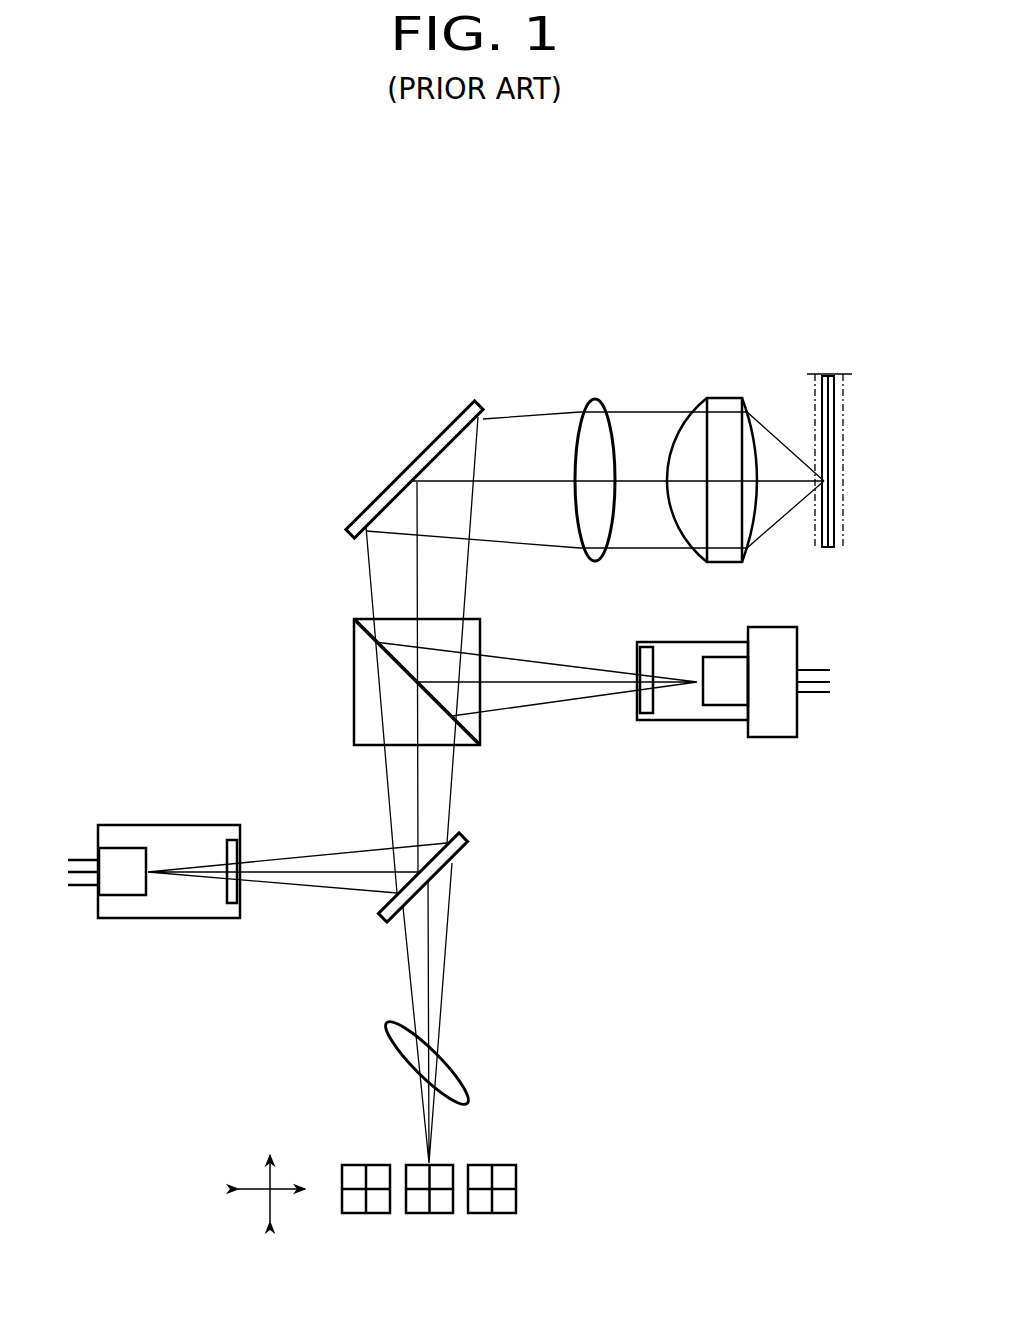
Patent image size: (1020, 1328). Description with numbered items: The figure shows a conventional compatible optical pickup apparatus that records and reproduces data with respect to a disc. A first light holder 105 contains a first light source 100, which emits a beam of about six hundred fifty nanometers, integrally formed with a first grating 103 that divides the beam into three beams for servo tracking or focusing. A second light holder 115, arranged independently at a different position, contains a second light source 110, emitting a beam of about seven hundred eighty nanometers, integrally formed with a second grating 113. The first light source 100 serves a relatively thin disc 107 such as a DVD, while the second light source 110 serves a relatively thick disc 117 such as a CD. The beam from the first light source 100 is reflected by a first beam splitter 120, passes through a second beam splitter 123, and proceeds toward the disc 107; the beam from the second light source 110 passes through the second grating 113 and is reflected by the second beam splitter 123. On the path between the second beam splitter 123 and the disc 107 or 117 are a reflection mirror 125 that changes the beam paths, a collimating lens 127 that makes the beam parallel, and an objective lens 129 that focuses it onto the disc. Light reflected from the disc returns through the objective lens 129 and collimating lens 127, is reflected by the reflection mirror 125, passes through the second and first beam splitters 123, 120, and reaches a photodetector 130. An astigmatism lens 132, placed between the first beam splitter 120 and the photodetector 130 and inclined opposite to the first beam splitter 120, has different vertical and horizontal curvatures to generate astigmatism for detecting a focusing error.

The first light source 100 is at (119, 855).
The first grating 103 is at (233, 845).
The first light holder 105 is at (159, 895).
The disc 107 is at (830, 550).
The second light source 110 is at (726, 697).
The second grating 113 is at (647, 712).
The second light holder 115 is at (738, 733).
The disc 117 is at (860, 489).
The first beam splitter 120 is at (466, 843).
The second beam splitter 123 is at (357, 666).
The reflection mirror 125 is at (388, 483).
The collimating lens 127 is at (595, 400).
The objective lens 129 is at (725, 403).
The photodetector 130 is at (535, 1147).
The astigmatism lens 132 is at (460, 1072).